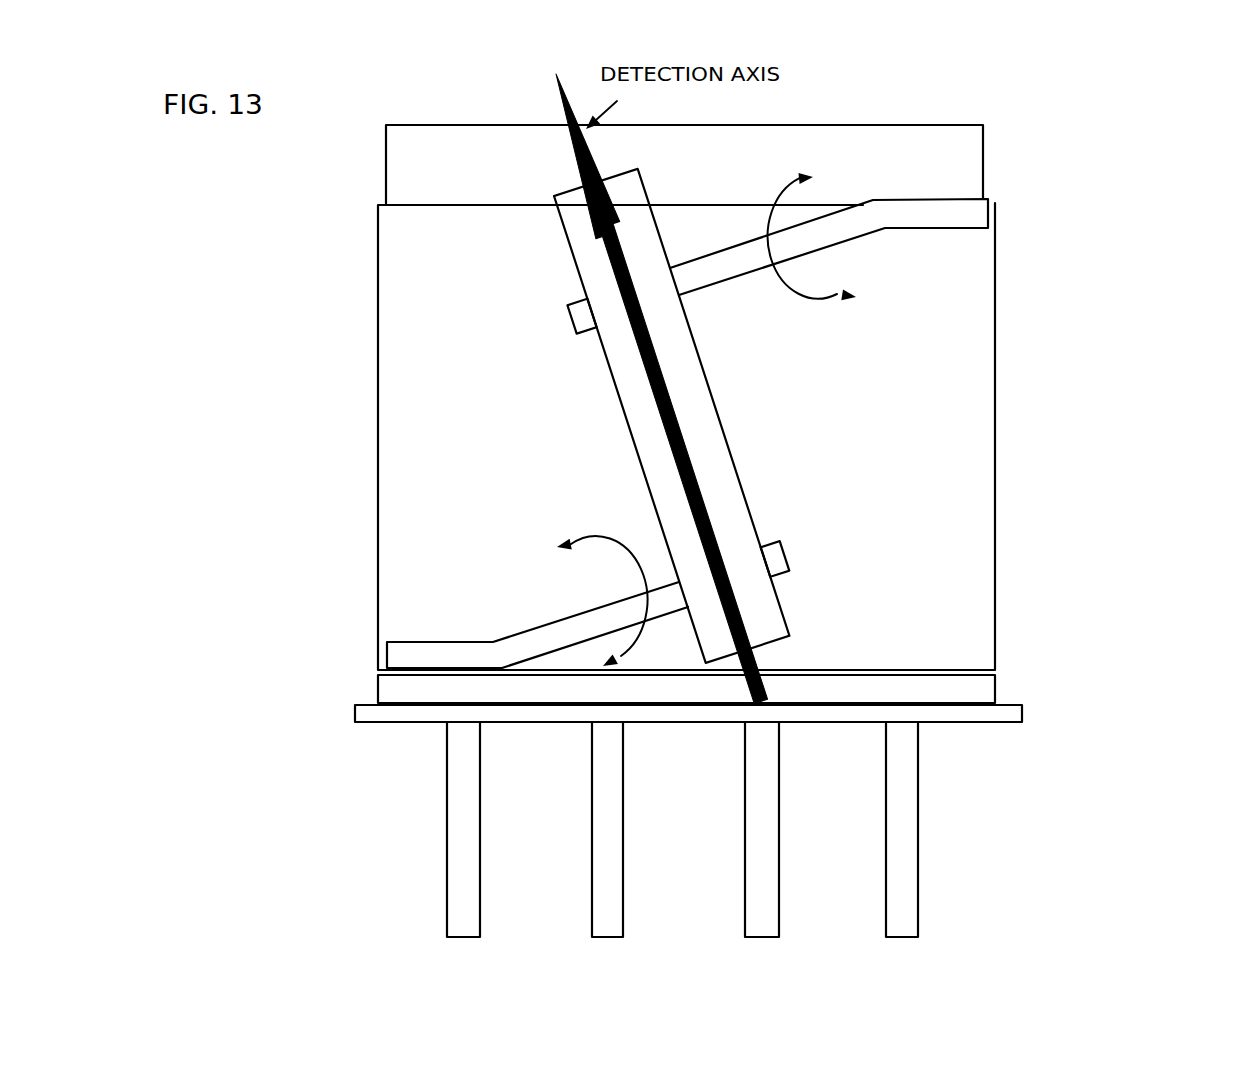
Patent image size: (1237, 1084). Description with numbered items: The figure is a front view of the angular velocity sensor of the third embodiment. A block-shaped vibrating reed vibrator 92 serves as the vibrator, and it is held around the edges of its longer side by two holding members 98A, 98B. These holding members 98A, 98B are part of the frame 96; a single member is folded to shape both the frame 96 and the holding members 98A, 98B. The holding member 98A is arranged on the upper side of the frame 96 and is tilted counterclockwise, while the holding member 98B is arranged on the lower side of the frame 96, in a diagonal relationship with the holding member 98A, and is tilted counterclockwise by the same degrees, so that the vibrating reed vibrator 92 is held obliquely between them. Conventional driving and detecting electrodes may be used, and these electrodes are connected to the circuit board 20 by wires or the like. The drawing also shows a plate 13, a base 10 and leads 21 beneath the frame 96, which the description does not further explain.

The circuit board 20 is at (985, 155).
The holding member 98A is at (863, 238).
The vibrating reed vibrator 92 is at (720, 415).
The frame 96 is at (997, 432).
The mounting plate 13 is at (1000, 697).
The base substrate 10 is at (1025, 707).
The leads 21 is at (920, 825).
The holding member 98B is at (528, 625).